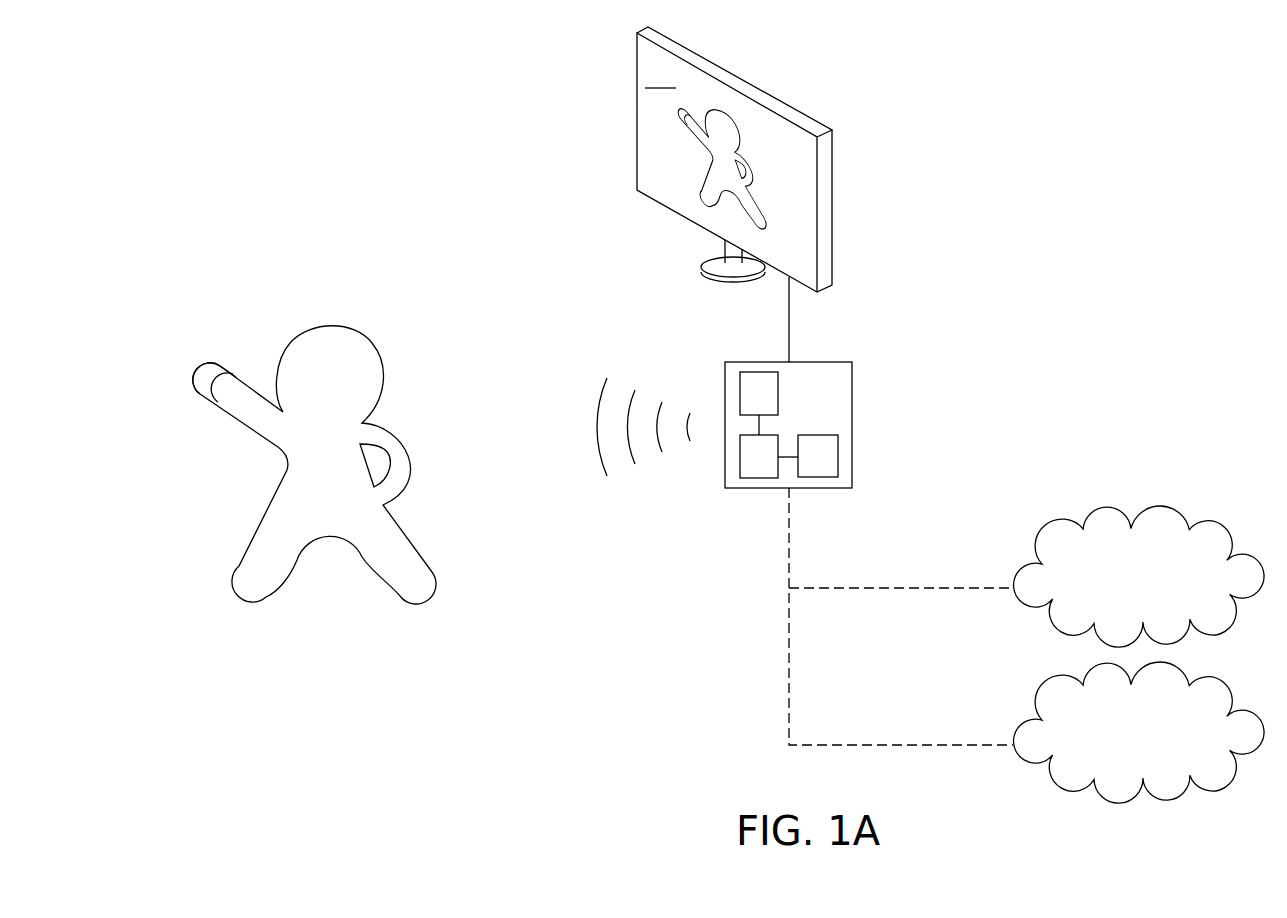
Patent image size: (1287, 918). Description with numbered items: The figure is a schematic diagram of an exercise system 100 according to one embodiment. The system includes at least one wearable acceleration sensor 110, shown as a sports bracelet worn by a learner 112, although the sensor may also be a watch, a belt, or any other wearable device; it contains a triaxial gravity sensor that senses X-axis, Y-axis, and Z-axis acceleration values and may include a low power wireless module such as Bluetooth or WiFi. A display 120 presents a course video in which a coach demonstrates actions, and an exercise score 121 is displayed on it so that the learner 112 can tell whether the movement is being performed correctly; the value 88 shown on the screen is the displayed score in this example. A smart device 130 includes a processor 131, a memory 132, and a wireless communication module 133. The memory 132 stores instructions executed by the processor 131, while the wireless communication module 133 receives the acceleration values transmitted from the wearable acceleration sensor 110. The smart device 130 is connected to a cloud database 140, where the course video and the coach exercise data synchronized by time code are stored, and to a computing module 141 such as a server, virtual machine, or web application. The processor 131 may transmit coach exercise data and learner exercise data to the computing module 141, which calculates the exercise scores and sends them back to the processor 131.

The exercise system 100 is at (186, 112).
The wearable acceleration sensor 110 is at (238, 372).
The learner 112 is at (331, 326).
The display 120 is at (722, 159).
The exercise score 121 is at (640, 67).
The score display 88 is at (660, 75).
The smart device 130 is at (774, 453).
The processor 131 is at (760, 478).
The memory 132 is at (840, 458).
The wireless communication module 133 is at (757, 393).
The cloud database 140 is at (1118, 616).
The computing module 141 is at (1210, 770).